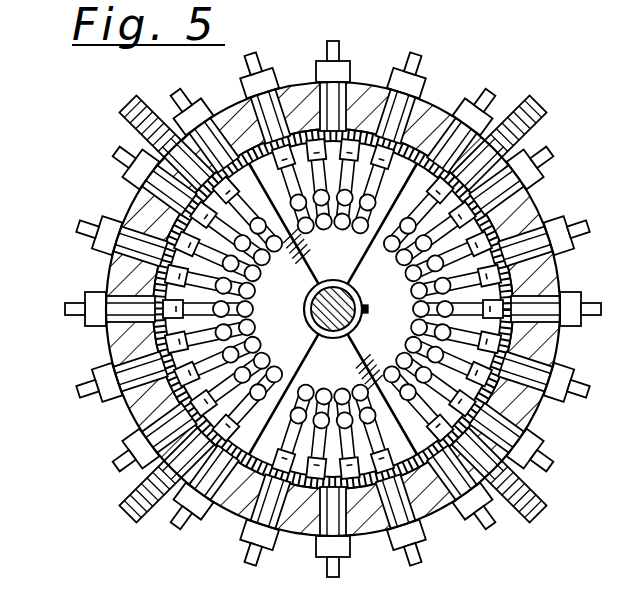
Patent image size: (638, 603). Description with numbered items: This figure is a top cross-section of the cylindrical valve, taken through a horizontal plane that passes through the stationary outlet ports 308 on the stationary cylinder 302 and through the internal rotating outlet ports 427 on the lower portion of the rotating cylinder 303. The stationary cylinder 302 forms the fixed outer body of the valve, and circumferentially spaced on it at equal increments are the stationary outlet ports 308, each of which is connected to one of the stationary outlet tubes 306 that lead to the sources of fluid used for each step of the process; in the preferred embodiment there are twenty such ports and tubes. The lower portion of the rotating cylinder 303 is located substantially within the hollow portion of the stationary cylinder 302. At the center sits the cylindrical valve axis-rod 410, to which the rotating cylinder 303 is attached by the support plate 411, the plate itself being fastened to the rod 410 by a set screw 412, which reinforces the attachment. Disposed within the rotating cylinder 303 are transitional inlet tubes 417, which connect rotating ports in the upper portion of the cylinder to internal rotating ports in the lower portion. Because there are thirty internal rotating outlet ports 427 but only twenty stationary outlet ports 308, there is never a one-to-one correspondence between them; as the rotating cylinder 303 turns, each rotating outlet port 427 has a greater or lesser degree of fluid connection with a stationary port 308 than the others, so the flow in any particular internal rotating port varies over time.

The stationary cylinder 302 is at (540, 207).
The rotating cylinder 303 is at (540, 276).
The stationary outlet tubes 306 is at (87, 218).
The stationary outlet ports 308 is at (130, 198).
The cylindrical valve axis-rod 410 is at (330, 281).
The support plate 411 is at (140, 442).
The set screw 412 is at (368, 309).
The transitional inlet tubes 417 is at (289, 74).
The internal rotating outlet ports 427 is at (430, 108).